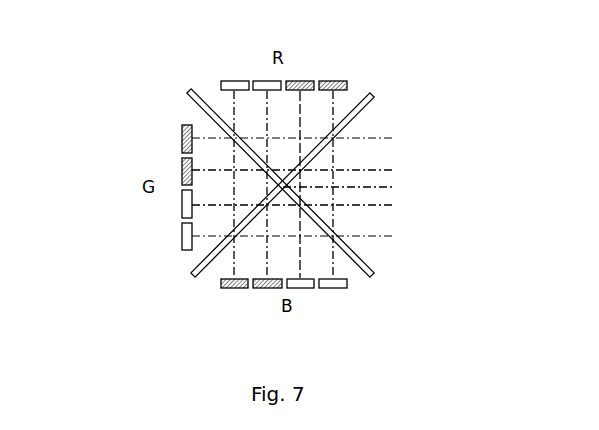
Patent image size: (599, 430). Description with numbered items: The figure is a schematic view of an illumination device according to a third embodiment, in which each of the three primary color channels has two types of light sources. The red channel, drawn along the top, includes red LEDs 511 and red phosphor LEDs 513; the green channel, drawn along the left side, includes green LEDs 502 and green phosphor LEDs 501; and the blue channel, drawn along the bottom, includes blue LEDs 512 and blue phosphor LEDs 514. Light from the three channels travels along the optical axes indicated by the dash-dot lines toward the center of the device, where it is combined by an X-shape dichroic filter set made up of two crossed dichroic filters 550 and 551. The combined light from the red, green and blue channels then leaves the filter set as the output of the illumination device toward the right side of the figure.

The dichroic filter 550 is at (190, 90).
The dichroic filter 551 is at (197, 270).
The red LEDs 511 is at (243, 80).
The blue LEDs 512 is at (335, 288).
The red phosphor LEDs 513 is at (338, 80).
The blue phosphor LEDs 514 is at (224, 288).
The green phosphor LEDs 501 is at (181, 140).
The green LEDs 502 is at (181, 239).